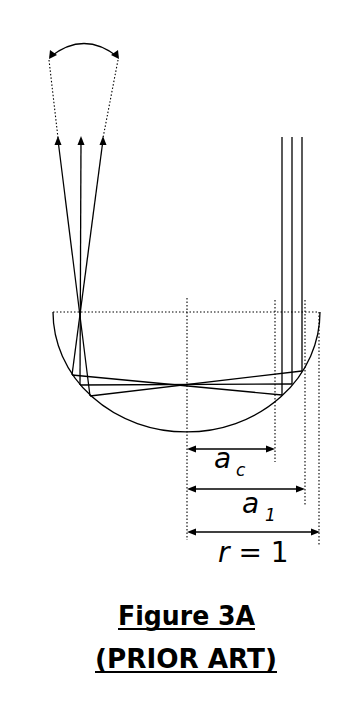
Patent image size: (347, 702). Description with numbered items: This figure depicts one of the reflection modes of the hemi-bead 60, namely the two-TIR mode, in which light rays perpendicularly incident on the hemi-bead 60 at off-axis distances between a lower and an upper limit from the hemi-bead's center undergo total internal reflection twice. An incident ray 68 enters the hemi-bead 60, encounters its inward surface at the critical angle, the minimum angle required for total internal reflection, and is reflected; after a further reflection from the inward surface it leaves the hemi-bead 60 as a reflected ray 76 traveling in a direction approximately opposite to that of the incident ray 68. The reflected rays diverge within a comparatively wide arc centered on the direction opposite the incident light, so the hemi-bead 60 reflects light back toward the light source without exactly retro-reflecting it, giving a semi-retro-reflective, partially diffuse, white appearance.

The hemi-bead 60 is at (122, 422).
The incident ray 68 is at (293, 136).
The reflected ray 76 is at (82, 137).